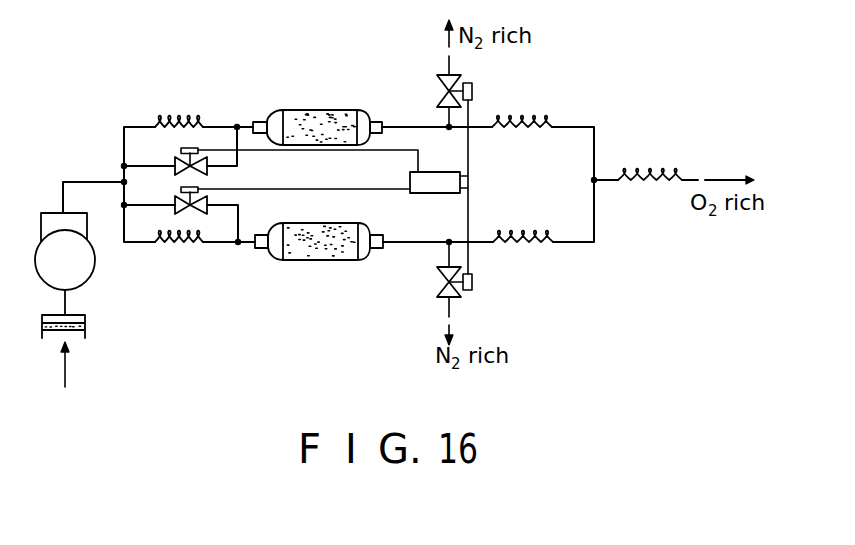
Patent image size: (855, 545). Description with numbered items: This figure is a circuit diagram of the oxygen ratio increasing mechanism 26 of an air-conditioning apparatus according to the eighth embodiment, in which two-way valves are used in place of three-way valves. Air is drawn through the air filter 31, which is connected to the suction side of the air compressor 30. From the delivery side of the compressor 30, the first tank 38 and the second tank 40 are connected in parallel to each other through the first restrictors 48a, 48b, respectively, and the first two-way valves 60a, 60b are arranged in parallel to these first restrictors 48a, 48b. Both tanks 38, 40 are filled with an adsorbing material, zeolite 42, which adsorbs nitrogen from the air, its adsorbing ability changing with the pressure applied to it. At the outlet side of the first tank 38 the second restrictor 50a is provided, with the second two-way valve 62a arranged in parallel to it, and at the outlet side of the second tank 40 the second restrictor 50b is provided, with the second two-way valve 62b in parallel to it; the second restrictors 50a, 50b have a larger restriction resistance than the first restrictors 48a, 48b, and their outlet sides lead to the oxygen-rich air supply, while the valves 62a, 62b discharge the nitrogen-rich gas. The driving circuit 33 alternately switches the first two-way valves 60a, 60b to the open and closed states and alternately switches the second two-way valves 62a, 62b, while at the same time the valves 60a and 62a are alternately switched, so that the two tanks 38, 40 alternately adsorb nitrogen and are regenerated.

The oxygen ratio increasing mechanism 26 is at (270, 84).
The air compressor 30 is at (89, 278).
The air filter 31 is at (85, 326).
The driving circuit 33 is at (410, 182).
The first tank 38 is at (328, 110).
The second tank 40 is at (302, 262).
The zeolite 42 is at (292, 110).
The first restrictor 48a is at (177, 117).
The first restrictor 48b is at (190, 249).
The second restrictor 50a is at (527, 118).
The second restrictor 50b is at (516, 244).
The first two-way valve 60a is at (210, 167).
The first two-way valve 60b is at (210, 199).
The second two-way valve 62a is at (443, 92).
The second two-way valve 62b is at (473, 281).